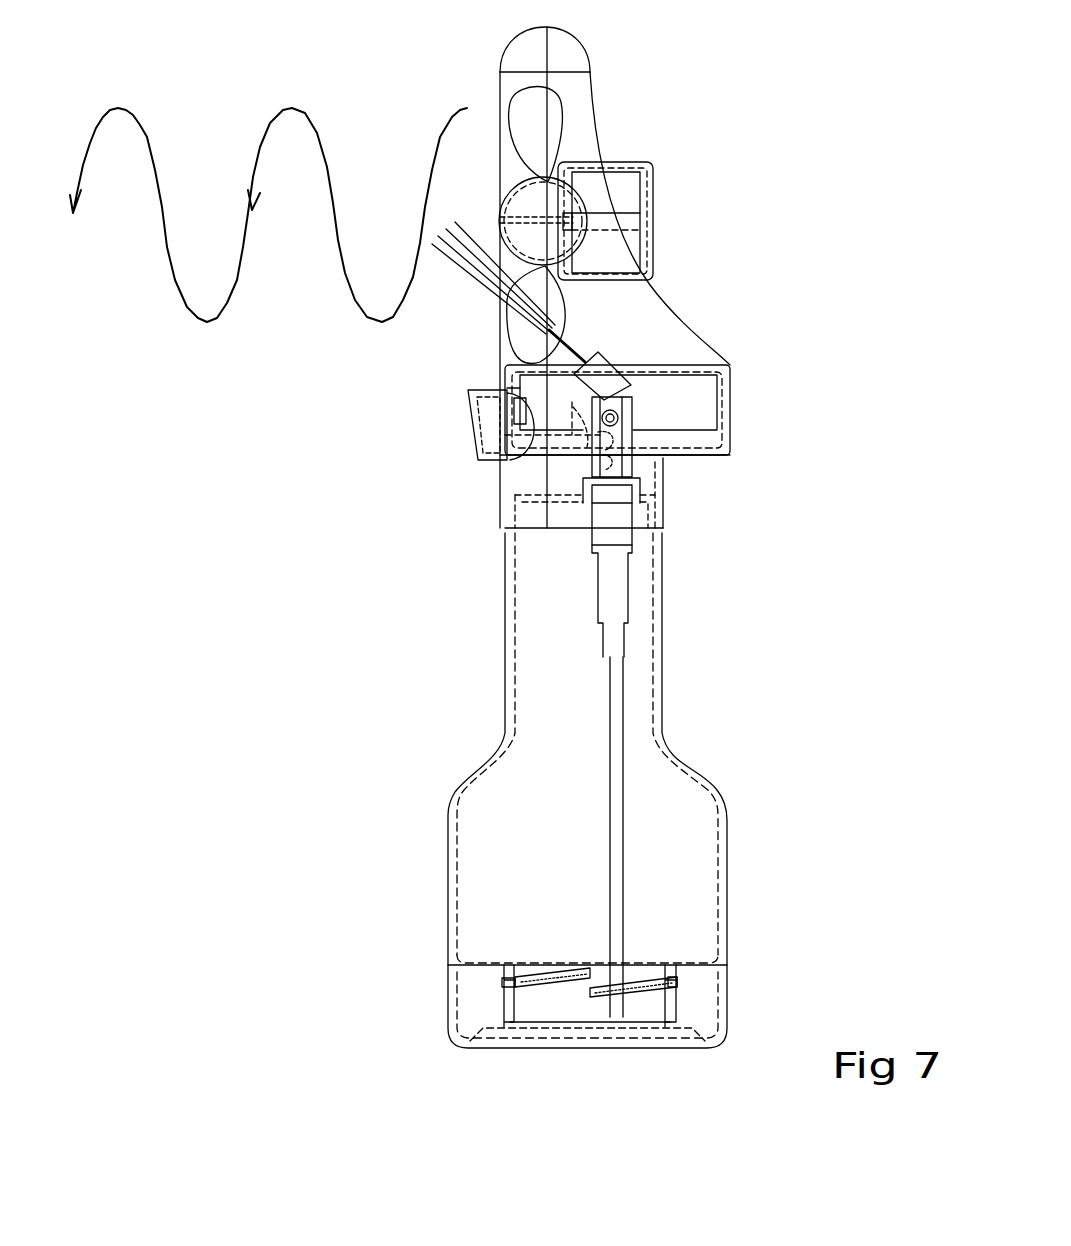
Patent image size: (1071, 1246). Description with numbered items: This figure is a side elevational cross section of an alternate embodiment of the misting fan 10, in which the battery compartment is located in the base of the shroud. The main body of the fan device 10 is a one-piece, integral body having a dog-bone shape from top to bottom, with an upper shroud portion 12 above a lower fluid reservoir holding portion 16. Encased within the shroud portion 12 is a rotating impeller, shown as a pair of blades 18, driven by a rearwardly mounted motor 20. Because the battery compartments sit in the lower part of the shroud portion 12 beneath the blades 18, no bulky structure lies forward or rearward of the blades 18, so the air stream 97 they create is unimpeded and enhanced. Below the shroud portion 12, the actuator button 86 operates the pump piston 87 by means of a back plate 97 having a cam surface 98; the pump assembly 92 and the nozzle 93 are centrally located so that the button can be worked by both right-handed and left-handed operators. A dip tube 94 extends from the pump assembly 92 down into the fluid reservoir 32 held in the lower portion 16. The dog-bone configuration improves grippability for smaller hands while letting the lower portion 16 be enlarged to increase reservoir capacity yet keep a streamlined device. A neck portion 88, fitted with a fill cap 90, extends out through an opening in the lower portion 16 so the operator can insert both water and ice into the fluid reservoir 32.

The misting fan 10 is at (772, 410).
The shroud portion 12 is at (590, 128).
The lower portion 16 is at (720, 800).
The blades 18 is at (523, 112).
The motor 20 is at (633, 208).
The reservoir 32 is at (456, 853).
The actuator button 86 is at (480, 430).
The pump piston 87 is at (623, 468).
The neck portion 88 is at (527, 1002).
The fill cap 90 is at (728, 1002).
The pump assembly 92 is at (630, 445).
The nozzle 93 is at (607, 360).
The dip tube 94 is at (622, 745).
The back plate 97 is at (257, 167).
The cam surface 98 is at (648, 408).